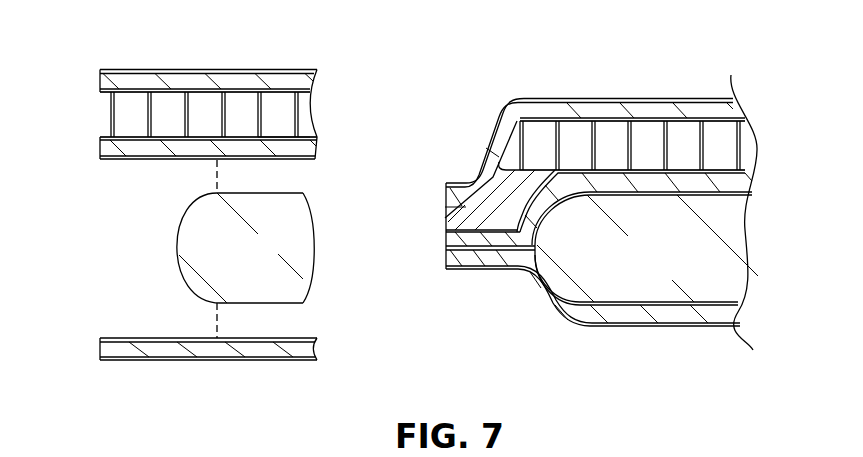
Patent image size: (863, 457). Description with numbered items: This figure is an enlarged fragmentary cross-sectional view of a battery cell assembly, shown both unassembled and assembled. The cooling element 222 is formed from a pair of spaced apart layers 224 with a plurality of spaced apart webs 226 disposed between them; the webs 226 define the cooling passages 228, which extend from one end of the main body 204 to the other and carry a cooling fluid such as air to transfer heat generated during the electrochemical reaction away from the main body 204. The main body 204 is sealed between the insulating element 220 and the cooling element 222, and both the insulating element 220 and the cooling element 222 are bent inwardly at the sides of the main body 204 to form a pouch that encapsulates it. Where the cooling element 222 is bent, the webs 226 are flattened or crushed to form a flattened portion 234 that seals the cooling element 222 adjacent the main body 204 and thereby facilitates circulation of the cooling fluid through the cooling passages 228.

The main body 204 is at (274, 258).
The insulating element 220 is at (95, 346).
The cooling element 222 is at (85, 115).
The layers 224 is at (278, 133).
The webs 226 is at (183, 120).
The cooling passages 228 is at (234, 94).
The flattened portion 234 is at (445, 217).